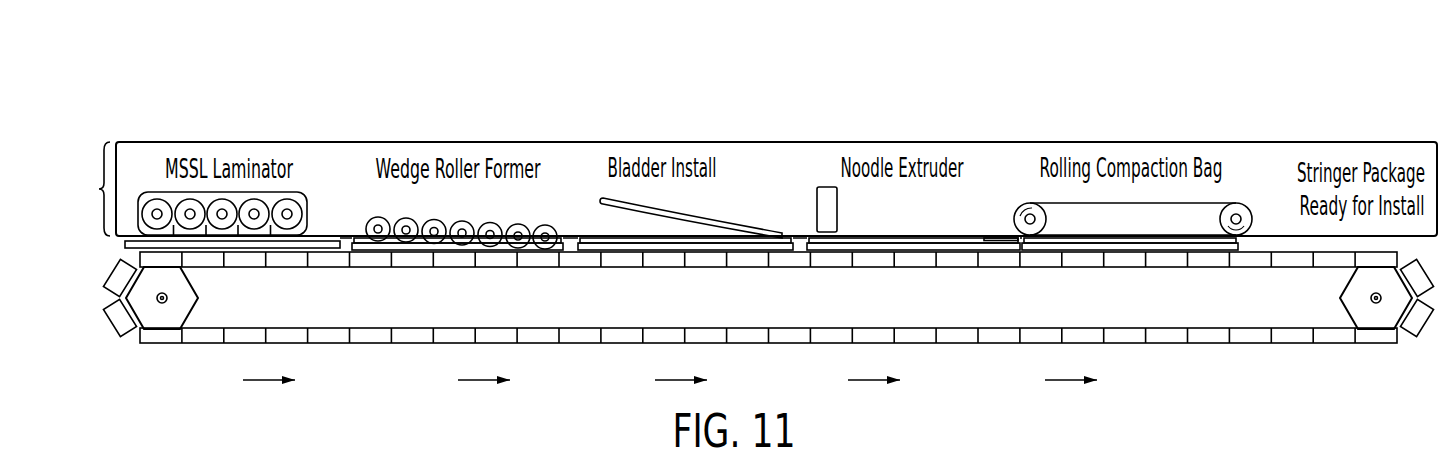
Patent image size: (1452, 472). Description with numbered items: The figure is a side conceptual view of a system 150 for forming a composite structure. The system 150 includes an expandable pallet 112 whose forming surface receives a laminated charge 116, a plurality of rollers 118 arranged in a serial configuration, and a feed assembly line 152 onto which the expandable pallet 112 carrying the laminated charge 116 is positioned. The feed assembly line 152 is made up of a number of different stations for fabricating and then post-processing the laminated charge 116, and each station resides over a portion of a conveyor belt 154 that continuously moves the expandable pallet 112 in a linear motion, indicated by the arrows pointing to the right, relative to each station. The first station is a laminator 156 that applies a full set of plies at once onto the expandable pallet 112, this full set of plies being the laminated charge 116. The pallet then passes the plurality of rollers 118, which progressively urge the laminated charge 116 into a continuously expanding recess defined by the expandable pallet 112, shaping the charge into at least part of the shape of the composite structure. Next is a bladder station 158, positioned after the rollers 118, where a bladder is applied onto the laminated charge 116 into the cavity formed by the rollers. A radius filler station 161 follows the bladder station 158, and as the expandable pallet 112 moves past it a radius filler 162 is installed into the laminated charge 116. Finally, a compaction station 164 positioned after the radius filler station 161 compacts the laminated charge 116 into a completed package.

The system 150 is at (312, 112).
The feed assembly line 152 is at (87, 189).
The laminator 156 is at (227, 134).
The plurality of rollers 118 is at (445, 134).
The bladder station 158 is at (673, 134).
The radius filler station 161 is at (906, 134).
The compaction station 164 is at (1131, 134).
The expandable pallet 112 is at (299, 256).
The laminated charge 116 is at (457, 253).
The radius filler 162 is at (984, 241).
The conveyor belt 154 is at (438, 346).